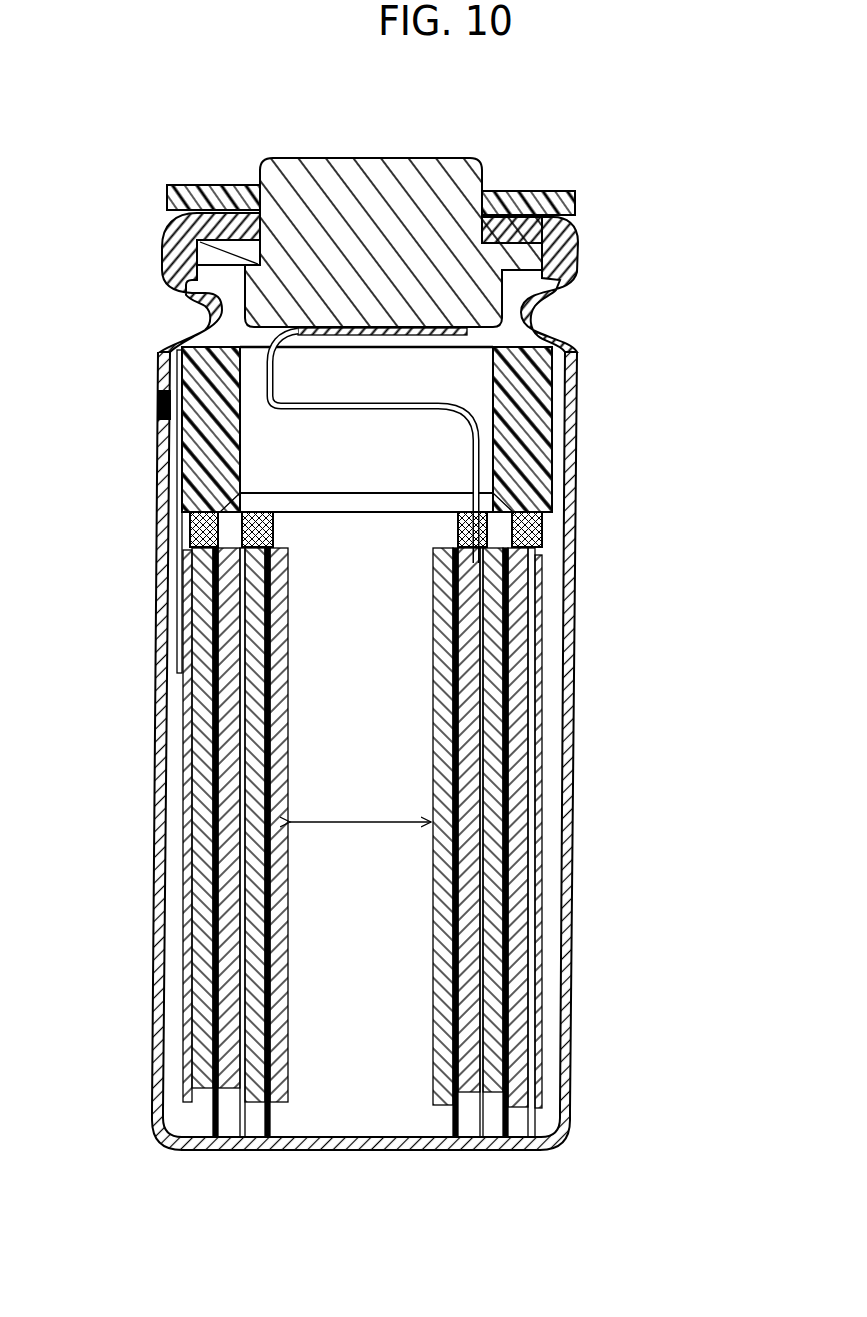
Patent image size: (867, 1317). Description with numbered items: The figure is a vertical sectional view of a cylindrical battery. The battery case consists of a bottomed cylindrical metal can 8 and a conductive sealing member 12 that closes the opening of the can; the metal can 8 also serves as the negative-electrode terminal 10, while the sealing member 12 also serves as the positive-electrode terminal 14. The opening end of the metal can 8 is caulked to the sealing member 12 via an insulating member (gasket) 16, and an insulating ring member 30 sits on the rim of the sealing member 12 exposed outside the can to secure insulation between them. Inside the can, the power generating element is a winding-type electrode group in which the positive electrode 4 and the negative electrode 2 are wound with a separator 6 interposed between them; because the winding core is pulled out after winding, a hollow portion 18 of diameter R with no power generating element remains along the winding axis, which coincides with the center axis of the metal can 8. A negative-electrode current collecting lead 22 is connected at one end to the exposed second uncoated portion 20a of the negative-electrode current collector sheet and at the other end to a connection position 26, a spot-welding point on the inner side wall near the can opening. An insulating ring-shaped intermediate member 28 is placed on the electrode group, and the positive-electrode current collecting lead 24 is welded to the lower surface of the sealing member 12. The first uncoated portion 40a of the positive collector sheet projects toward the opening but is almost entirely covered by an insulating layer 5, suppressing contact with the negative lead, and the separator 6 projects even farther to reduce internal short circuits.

The negative-electrode terminal 10 is at (478, 1155).
The metal can 8 is at (577, 397).
The hollow portion 18 is at (347, 1102).
The positive-electrode terminal 14 is at (310, 147).
The sealing member 12 is at (397, 180).
The insulating ring member 30 is at (530, 192).
The insulating member (gasket) 16 is at (580, 260).
The negative-electrode current collecting lead 22 is at (178, 505).
The insulating ring-shaped intermediate member 28 is at (540, 440).
The connection position (welding point) 26 is at (157, 405).
The positive-electrode current collecting lead 24 is at (480, 468).
The insulating layer 5 is at (255, 515).
The first uncoated portion 40a is at (275, 530).
The separator 6 is at (543, 533).
The negative electrode 2 is at (490, 697).
The positive electrode 4 is at (520, 790).
The second uncoated portion (A) 20a is at (178, 760).
The diameter of hollow portion R is at (358, 823).